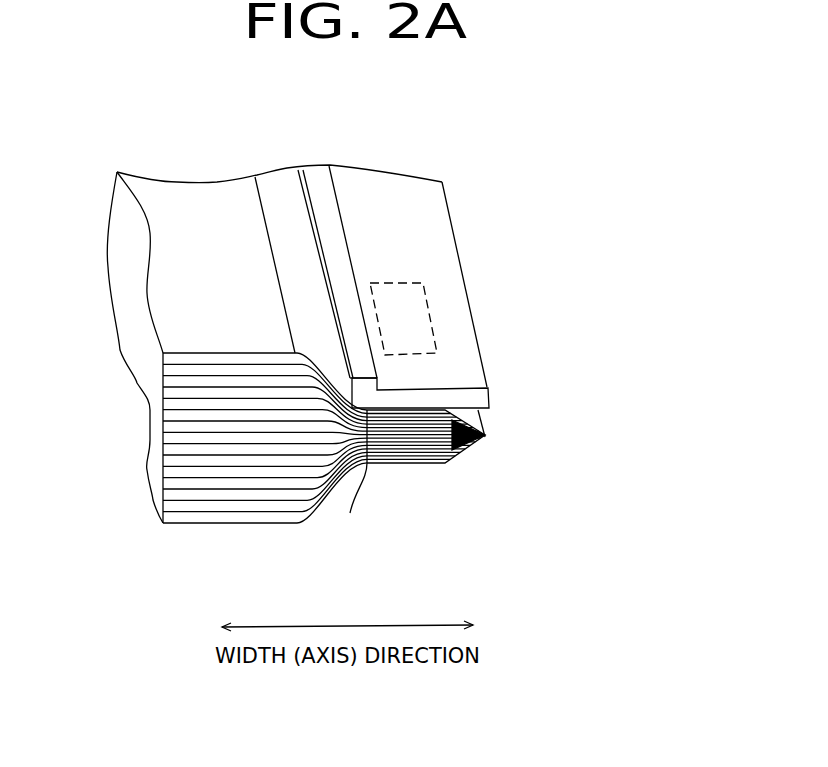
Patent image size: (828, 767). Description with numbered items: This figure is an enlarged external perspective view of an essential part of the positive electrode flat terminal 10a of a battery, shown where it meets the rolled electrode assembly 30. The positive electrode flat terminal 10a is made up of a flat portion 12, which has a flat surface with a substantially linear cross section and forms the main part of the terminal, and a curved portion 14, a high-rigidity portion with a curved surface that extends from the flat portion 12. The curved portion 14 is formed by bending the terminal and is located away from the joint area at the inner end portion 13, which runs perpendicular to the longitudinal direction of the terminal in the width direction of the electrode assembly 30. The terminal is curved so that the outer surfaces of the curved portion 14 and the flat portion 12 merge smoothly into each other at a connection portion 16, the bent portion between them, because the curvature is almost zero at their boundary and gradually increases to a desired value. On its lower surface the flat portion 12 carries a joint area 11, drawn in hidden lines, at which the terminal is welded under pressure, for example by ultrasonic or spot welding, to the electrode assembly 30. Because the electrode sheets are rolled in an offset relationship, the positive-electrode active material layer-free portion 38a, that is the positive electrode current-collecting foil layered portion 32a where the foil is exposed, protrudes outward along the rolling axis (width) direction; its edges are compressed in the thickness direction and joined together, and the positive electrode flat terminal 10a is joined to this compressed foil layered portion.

The positive electrode flat terminal 10a is at (453, 158).
The joint area 11 is at (415, 310).
The flat portion 12 is at (472, 357).
The end portion 13 is at (310, 230).
The curved portion 14 is at (318, 175).
The connection portion 16 is at (355, 477).
The electrode assembly 30 is at (235, 527).
The positive electrode current-collecting foil layered portion 32a is at (437, 478).
The positive-electrode active material layer-free portion 38a is at (408, 470).